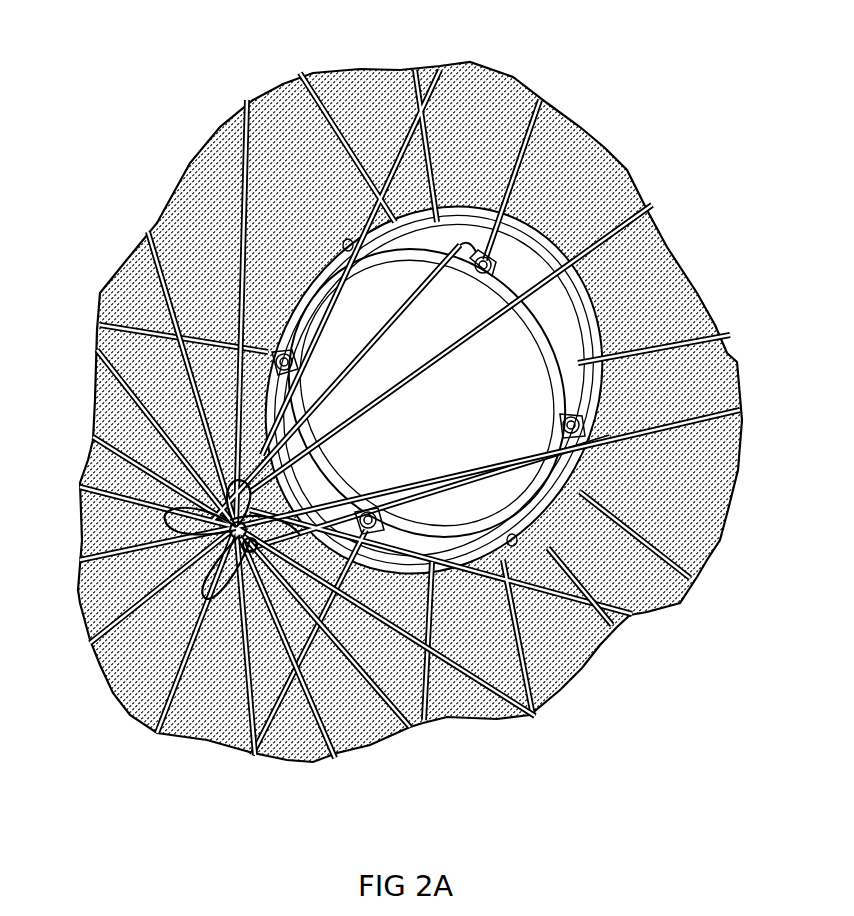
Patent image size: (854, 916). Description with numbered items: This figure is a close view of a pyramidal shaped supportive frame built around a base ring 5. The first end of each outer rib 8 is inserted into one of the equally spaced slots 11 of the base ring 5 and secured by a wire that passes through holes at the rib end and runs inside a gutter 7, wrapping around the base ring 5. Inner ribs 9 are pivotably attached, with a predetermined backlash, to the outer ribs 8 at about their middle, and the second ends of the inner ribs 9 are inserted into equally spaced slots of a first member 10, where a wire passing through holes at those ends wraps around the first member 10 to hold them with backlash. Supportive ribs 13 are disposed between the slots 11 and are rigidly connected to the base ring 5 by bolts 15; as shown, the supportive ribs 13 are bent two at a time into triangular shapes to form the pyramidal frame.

The base ring 5 is at (340, 250).
The gutter 7 is at (580, 327).
The outer rib 8 is at (653, 540).
The inner rib 9 is at (313, 707).
The first member 10 is at (248, 482).
The slot 11 is at (600, 493).
The supportive rib 13 is at (383, 328).
The bolt 15 is at (482, 258).